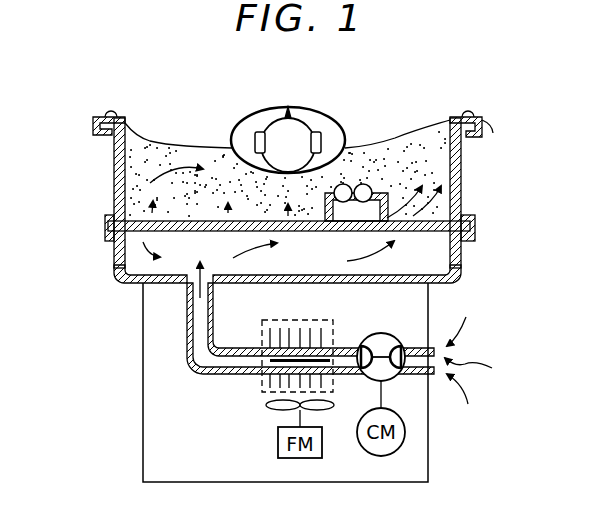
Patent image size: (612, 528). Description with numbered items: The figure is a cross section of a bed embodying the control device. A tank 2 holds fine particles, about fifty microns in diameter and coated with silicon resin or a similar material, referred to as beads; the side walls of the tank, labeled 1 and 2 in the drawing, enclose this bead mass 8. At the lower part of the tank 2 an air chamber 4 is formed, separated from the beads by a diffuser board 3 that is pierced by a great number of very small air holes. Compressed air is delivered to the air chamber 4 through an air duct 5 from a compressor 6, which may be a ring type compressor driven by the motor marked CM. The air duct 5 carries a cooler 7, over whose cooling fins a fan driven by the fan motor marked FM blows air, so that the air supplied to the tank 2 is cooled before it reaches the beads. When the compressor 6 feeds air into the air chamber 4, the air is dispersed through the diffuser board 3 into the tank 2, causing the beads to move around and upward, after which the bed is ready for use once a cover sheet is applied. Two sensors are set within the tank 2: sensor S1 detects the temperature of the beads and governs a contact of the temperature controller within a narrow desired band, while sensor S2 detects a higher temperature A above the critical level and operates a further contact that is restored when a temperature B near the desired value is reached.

The left tank wall 1 is at (114, 177).
The tank 2 is at (457, 167).
The diffuser board 3 is at (106, 240).
The air chamber 4 is at (127, 258).
The air duct 5 is at (188, 363).
The compressor 6 is at (390, 333).
The cooler 7 is at (258, 382).
The liquid bath 8 is at (148, 118).
The sensor S1 is at (341, 185).
The sensor S2 is at (369, 212).